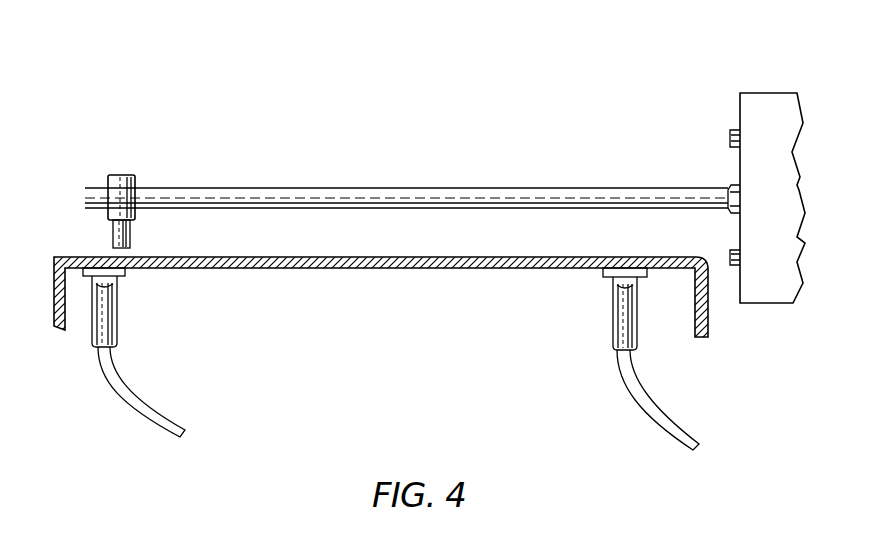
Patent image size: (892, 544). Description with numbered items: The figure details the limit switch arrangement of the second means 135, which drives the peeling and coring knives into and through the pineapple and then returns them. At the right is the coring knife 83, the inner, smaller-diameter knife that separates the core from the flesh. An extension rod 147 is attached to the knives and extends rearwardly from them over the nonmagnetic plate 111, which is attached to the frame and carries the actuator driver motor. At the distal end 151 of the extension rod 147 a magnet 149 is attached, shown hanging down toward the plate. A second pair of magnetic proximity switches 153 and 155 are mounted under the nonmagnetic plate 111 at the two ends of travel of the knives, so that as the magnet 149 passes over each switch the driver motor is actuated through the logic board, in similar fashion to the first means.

The coring knife 83 is at (752, 113).
The nonmagnetic plate 111 is at (350, 268).
The second means 135 is at (276, 170).
The extension rod 147 is at (414, 195).
The magnet 149 is at (122, 232).
The distal end 151 is at (108, 191).
The magnetic proximity switch 153 is at (106, 325).
The magnetic proximity switch 155 is at (620, 328).